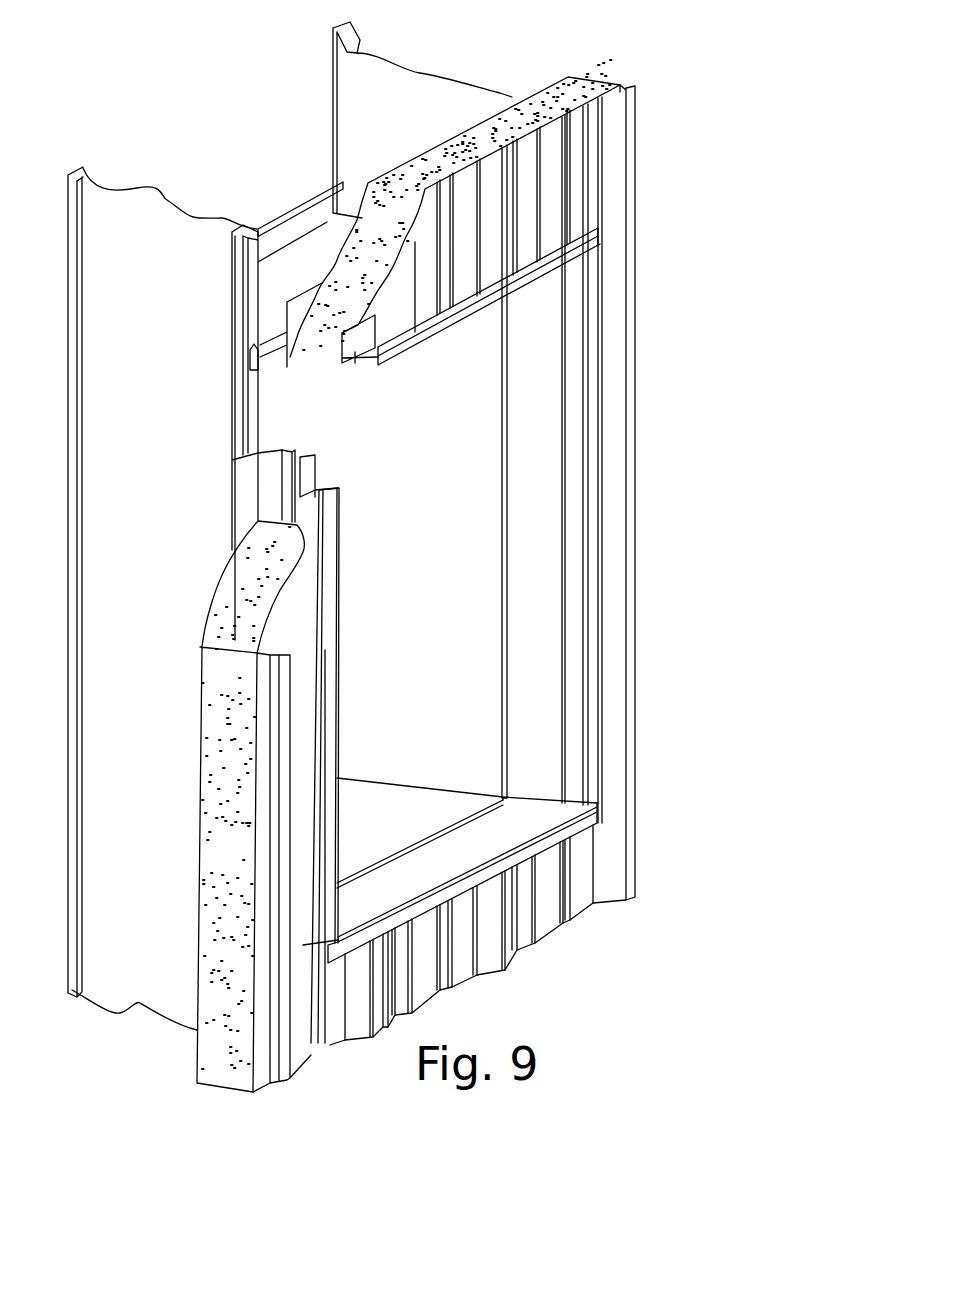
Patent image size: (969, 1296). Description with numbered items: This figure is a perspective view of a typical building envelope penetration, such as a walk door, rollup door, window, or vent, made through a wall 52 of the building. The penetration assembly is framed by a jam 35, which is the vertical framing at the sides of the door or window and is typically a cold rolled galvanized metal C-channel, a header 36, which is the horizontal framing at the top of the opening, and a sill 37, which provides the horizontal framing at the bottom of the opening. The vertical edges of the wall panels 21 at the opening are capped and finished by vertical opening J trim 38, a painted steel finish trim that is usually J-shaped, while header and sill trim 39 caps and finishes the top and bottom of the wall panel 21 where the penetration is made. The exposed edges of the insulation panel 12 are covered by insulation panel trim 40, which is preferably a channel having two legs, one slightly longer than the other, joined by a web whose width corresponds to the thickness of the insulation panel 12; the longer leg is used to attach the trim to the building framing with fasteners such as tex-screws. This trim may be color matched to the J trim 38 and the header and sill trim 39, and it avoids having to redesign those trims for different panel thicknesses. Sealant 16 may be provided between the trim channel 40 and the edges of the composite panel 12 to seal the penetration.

The insulation panel 12 is at (612, 68).
The sealant 16 is at (251, 371).
The wall panel 21 is at (628, 876).
The jam 35 is at (393, 68).
The header 36 is at (300, 201).
The sill 37 is at (365, 830).
The vertical opening J trim 38 is at (573, 557).
The header and sill trim 39 is at (597, 236).
The insulation panel trim 40 is at (545, 427).
The wall 52 is at (700, 112).